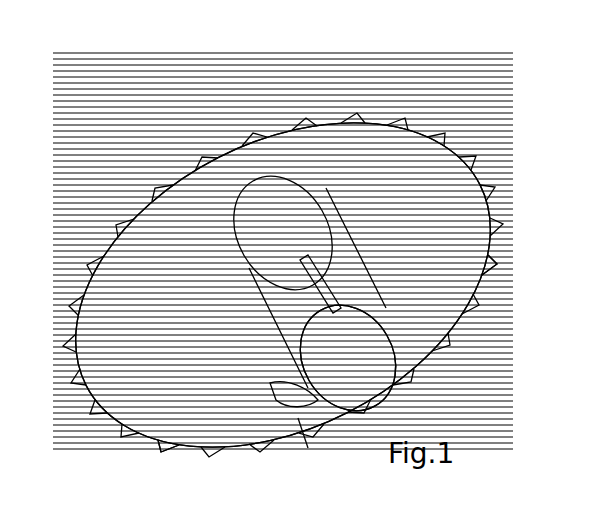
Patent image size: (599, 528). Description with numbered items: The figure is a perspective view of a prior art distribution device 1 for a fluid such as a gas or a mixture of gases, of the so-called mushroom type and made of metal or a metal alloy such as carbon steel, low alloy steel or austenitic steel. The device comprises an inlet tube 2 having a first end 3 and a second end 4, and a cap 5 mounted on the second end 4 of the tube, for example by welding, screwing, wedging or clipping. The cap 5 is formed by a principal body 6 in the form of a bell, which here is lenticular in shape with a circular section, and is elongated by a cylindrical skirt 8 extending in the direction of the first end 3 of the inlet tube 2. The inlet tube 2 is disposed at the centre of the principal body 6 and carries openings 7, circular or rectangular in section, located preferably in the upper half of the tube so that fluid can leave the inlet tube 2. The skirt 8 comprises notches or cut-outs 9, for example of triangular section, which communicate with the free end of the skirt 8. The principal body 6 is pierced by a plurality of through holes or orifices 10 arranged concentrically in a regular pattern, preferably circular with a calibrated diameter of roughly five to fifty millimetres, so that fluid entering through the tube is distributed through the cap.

The distribution device 1 is at (108, 176).
The inlet tube 2 is at (280, 385).
The first end 3 is at (358, 323).
The second end 4 is at (222, 206).
The cap 5 is at (222, 124).
The principal body 6 is at (365, 108).
The openings 7 is at (273, 285).
The skirt 8 is at (297, 428).
The notches or cut-outs 9 is at (457, 297).
The through holes or orifices 10 is at (177, 370).